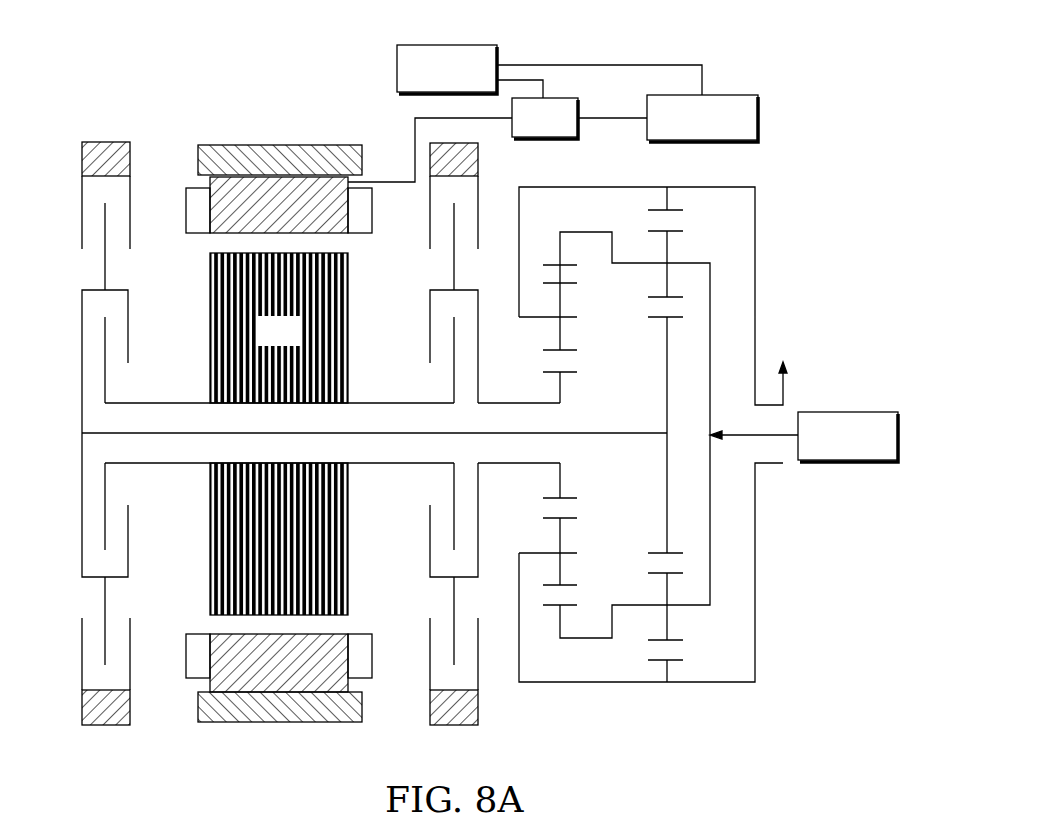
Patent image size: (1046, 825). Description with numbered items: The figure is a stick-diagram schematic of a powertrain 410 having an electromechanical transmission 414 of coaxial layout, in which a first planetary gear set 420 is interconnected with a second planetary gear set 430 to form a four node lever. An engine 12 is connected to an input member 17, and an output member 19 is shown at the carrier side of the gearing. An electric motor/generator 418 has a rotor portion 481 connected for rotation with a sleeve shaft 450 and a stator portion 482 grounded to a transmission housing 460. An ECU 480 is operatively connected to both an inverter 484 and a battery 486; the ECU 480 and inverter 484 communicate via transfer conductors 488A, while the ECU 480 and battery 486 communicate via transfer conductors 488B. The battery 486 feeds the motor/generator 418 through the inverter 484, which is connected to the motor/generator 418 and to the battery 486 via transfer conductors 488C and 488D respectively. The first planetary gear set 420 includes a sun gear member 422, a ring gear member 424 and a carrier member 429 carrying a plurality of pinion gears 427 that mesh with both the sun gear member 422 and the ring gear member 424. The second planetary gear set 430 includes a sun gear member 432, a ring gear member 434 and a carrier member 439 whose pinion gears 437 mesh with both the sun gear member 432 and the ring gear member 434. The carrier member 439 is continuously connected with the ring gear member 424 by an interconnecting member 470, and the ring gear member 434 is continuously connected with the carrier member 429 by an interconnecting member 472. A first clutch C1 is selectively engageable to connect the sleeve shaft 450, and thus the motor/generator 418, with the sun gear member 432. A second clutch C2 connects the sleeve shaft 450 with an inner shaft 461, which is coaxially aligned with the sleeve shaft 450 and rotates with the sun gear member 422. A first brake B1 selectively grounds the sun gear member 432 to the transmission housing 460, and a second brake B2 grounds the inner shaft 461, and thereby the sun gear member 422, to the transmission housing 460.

The engine 12 is at (848, 412).
The input member 17 is at (790, 437).
The output member 19 is at (770, 403).
The powertrain 410 is at (554, 104).
The electromechanical transmission 414 is at (243, 364).
The electric motor/generator 418 is at (372, 290).
The first planetary gear set 420 is at (704, 443).
The sun gear member 422 is at (657, 318).
The ring gear member 424 is at (672, 210).
The pinion gears 427 is at (668, 250).
The carrier member 429 is at (690, 263).
The second planetary gear set 430 is at (639, 454).
The sun gear member 432 is at (566, 372).
The ring gear member 434 is at (552, 265).
The pinion gears 437 is at (560, 303).
The carrier member 439 is at (533, 318).
The sleeve shaft 450 is at (200, 403).
The transmission housing 460 is at (105, 142).
The inner shaft 461 is at (335, 433).
The interconnecting member 470 is at (573, 187).
The interconnecting member 472 is at (585, 233).
The ECU 480 is at (397, 62).
The rotor portion 481 is at (210, 300).
The stator portion 482 is at (210, 185).
The inverter 484 is at (605, 120).
The battery 486 is at (735, 95).
The transfer conductors 488A is at (527, 80).
The transfer conductors 488B is at (590, 65).
The transfer conductors 488C is at (440, 118).
The transfer conductors 488D is at (630, 120).
The first brake B1 is at (484, 247).
The second brake B2 is at (78, 262).
The clutch C1 is at (484, 312).
The clutch C2 is at (78, 318).